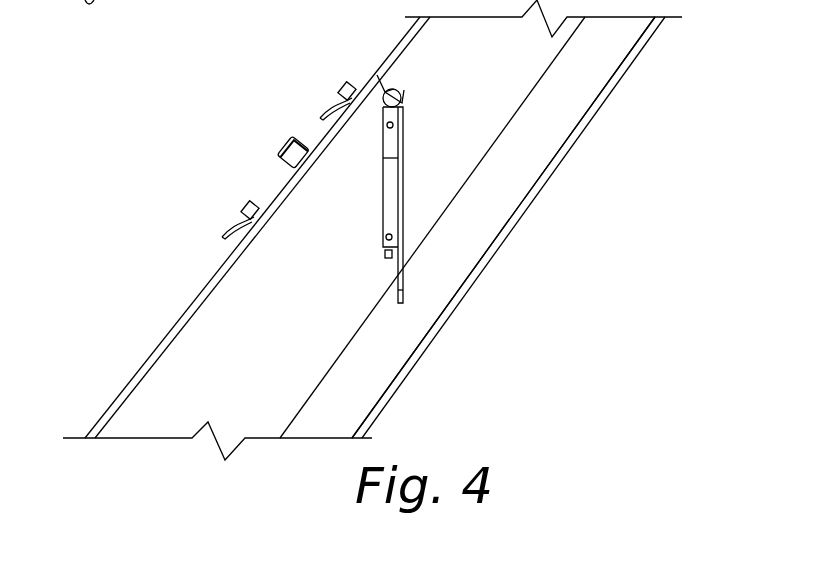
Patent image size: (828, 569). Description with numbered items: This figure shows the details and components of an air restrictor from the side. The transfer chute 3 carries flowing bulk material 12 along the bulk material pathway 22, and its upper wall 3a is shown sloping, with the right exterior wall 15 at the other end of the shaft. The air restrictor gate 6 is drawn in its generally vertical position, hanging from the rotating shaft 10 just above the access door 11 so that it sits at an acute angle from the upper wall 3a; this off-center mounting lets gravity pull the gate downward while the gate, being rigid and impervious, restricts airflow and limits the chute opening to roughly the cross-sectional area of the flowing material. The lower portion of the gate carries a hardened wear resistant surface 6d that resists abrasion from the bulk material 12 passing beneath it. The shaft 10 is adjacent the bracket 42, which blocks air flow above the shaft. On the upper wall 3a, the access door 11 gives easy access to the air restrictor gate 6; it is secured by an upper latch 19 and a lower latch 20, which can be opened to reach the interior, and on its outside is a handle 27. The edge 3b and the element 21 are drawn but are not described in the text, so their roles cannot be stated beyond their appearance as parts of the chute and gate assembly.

The transfer chute 3 is at (372, 242).
The upper wall 3a is at (198, 295).
The second edge of panel 3b is at (433, 340).
The air restrictor gate 6 is at (374, 170).
The wear resistant surface 6d is at (402, 290).
The rotating shaft 10 is at (403, 98).
The access door 11 is at (257, 226).
The bulk material 12 is at (483, 217).
The right exterior wall 15 is at (177, 408).
The upper latch 19 is at (340, 84).
The lower latch 20 is at (240, 206).
The rod sleeve 21 is at (390, 130).
The bulk material pathway 22 is at (543, 143).
The handle 27 is at (280, 148).
The bracket 42 is at (378, 73).